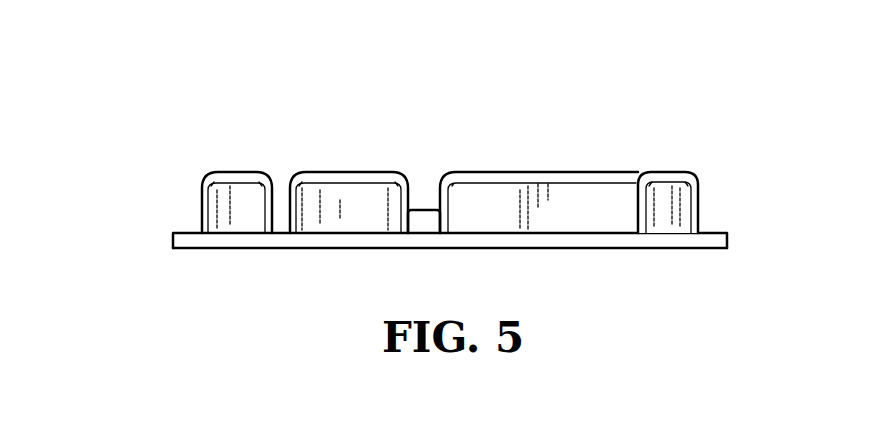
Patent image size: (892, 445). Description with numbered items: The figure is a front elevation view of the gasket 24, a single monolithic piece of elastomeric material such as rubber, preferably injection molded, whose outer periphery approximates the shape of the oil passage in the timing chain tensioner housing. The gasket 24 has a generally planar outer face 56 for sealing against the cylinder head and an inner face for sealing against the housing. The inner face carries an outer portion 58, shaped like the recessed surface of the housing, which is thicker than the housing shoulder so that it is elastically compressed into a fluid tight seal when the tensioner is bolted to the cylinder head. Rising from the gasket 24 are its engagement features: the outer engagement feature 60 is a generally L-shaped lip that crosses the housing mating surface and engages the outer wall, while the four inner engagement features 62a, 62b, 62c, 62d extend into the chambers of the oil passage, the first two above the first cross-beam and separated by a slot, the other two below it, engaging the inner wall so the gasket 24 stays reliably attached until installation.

The gasket 24 is at (444, 225).
The outer face 56 is at (439, 277).
The outer portion 58 is at (188, 248).
The outer engagement feature 60 is at (429, 207).
The inner engagement feature 62a is at (367, 211).
The inner engagement feature 62b is at (508, 192).
The inner engagement feature 62c is at (228, 202).
The inner engagement feature 62d is at (678, 189).